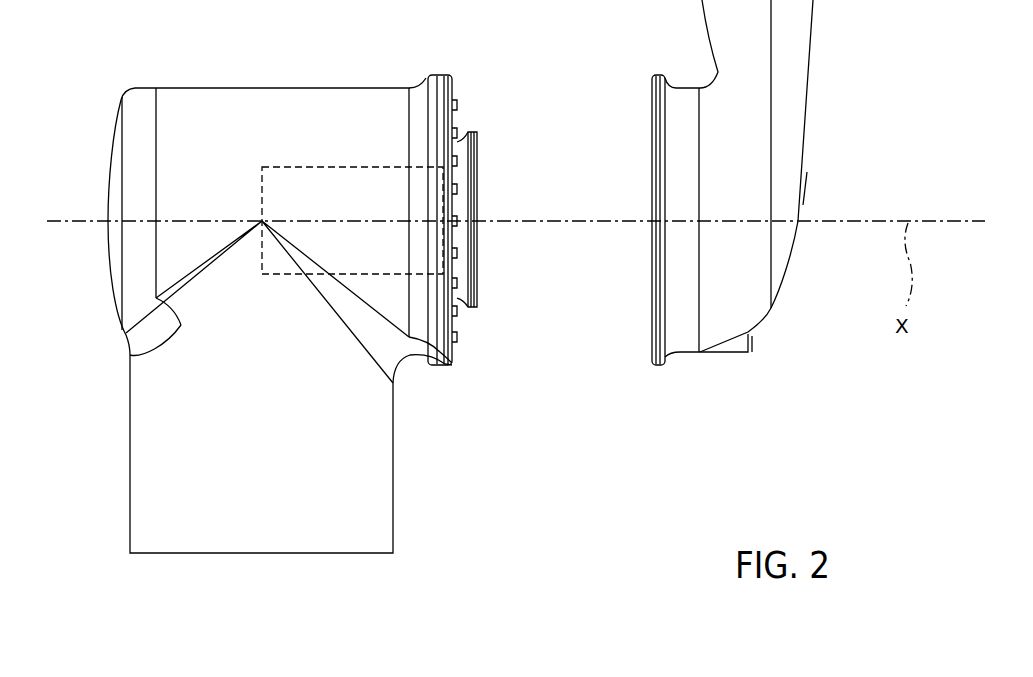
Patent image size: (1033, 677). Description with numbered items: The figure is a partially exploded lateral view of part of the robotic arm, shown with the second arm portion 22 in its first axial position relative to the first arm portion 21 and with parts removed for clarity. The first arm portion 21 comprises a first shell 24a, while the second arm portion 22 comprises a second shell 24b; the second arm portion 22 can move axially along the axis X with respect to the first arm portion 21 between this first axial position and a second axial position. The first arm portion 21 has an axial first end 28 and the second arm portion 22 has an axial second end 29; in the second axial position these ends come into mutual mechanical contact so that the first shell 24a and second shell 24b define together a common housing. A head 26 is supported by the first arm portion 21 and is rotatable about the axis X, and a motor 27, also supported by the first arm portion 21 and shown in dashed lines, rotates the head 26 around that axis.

The first arm portion 21 is at (128, 96).
The second arm portion 22 is at (816, 53).
The first shell 24a is at (312, 108).
The second shell 24b is at (792, 120).
The head 26 is at (462, 278).
The motor 27 is at (268, 166).
The first end 28 is at (442, 97).
The second end 29 is at (655, 88).